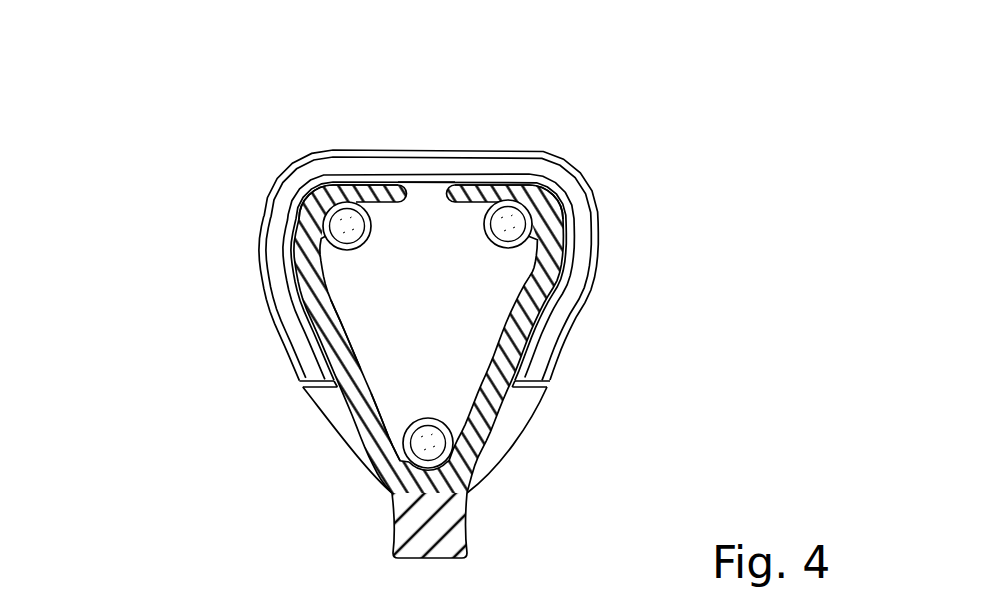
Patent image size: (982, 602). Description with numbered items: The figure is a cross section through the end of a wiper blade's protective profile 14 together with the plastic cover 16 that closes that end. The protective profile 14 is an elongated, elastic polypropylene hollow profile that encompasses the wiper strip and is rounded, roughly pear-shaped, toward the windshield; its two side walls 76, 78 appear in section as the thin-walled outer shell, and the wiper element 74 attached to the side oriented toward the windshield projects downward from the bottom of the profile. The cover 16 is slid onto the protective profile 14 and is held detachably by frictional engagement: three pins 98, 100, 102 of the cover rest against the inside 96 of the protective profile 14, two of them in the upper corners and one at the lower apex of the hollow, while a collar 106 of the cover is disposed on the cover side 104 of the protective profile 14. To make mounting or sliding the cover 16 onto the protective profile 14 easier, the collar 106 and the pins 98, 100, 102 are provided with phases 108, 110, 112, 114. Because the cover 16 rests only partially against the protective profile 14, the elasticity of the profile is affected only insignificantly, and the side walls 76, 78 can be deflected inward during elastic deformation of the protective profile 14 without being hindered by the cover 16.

The protective profile 14 is at (522, 389).
The cover 16 is at (593, 282).
The wiper element 74 is at (491, 543).
The side wall 76 is at (312, 357).
The side wall 78 is at (562, 331).
The inside 96 is at (344, 330).
The pin 98 is at (338, 229).
The pin 100 is at (512, 214).
The pin 102 is at (428, 447).
The cover side 104 is at (477, 183).
The collar 106 is at (338, 165).
The phase 108 is at (420, 183).
The phase 110 is at (327, 202).
The phase 112 is at (530, 237).
The phase 114 is at (410, 430).